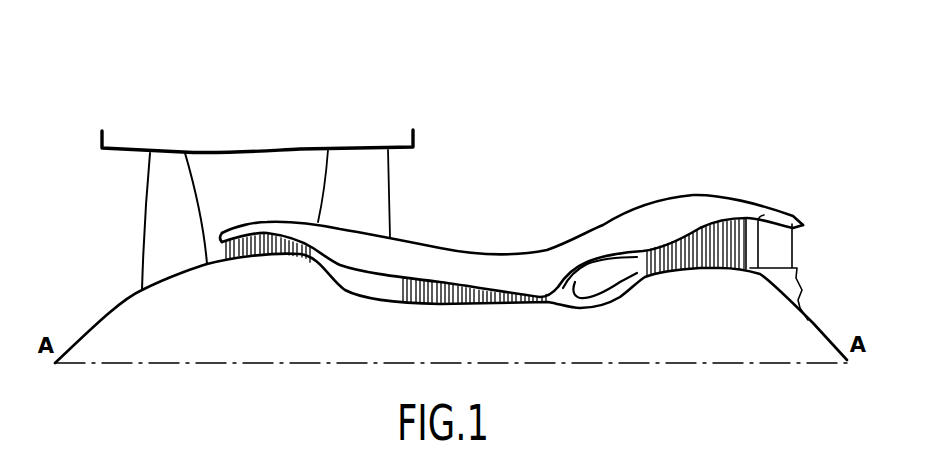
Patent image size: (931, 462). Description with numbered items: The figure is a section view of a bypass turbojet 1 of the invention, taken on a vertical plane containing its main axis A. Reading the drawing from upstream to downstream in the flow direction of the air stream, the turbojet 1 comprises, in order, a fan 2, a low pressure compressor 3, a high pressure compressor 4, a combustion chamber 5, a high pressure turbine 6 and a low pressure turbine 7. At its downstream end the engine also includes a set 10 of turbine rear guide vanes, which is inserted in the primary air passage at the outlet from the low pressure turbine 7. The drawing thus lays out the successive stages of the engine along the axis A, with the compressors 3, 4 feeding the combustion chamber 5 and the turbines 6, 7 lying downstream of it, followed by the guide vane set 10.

The bypass turbojet 1 is at (542, 118).
The fan 2 is at (165, 210).
The low pressure compressor 3 is at (254, 230).
The high pressure compressor 4 is at (450, 278).
The combustion chamber 5 is at (593, 275).
The high pressure turbine 6 is at (651, 242).
The low pressure turbine 7 is at (712, 193).
The set of turbine rear guide vanes 10 is at (772, 236).